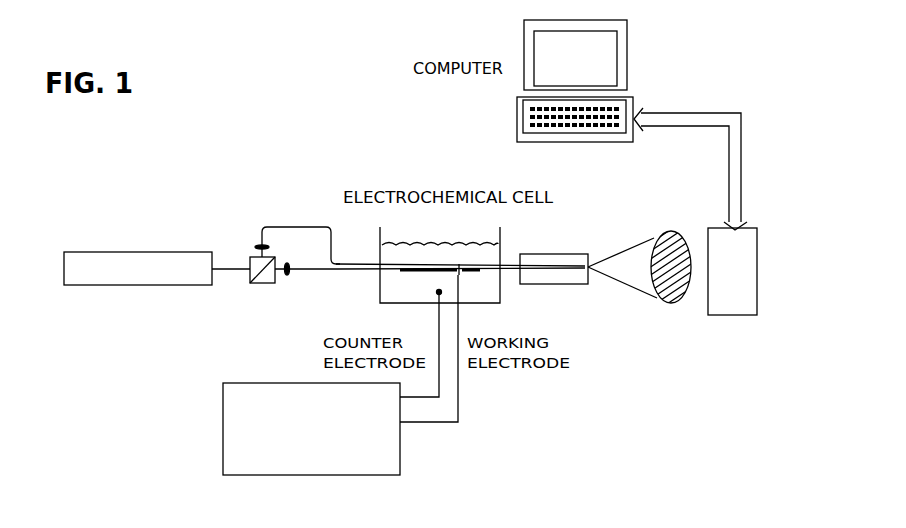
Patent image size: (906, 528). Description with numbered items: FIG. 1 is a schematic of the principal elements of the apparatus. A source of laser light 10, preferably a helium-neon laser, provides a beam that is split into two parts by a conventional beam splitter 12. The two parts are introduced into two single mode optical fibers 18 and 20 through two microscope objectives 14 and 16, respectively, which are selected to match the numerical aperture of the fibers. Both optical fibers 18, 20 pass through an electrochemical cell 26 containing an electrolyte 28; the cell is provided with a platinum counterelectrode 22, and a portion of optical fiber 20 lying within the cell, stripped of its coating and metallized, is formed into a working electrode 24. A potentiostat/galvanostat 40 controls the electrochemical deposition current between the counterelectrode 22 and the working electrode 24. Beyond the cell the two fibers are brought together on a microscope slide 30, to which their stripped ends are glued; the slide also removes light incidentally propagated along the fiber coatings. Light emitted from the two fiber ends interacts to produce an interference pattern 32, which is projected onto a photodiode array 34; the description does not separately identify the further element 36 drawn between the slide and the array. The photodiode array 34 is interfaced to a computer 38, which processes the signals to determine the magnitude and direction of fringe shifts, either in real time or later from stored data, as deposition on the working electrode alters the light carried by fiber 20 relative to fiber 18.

The HeNe laser 10 is at (118, 251).
The beam splitter 12 is at (262, 288).
The microscope objective 14 is at (257, 243).
The microscope objective 16 is at (290, 280).
The single mode optical fiber 18 is at (312, 225).
The single mode optical fiber 20 is at (358, 272).
The counterelectrode 22 is at (436, 292).
The working electrode 24 is at (468, 274).
The electrochemical cell 26 is at (503, 250).
The electrolyte 28 is at (407, 242).
The microscope slide 30 is at (577, 287).
The interference pattern 32 is at (627, 48).
The photodiode array 34 is at (705, 303).
The lens 36 is at (672, 233).
The computer 38 is at (636, 100).
The potentiostat/galvanostat 40 is at (401, 450).